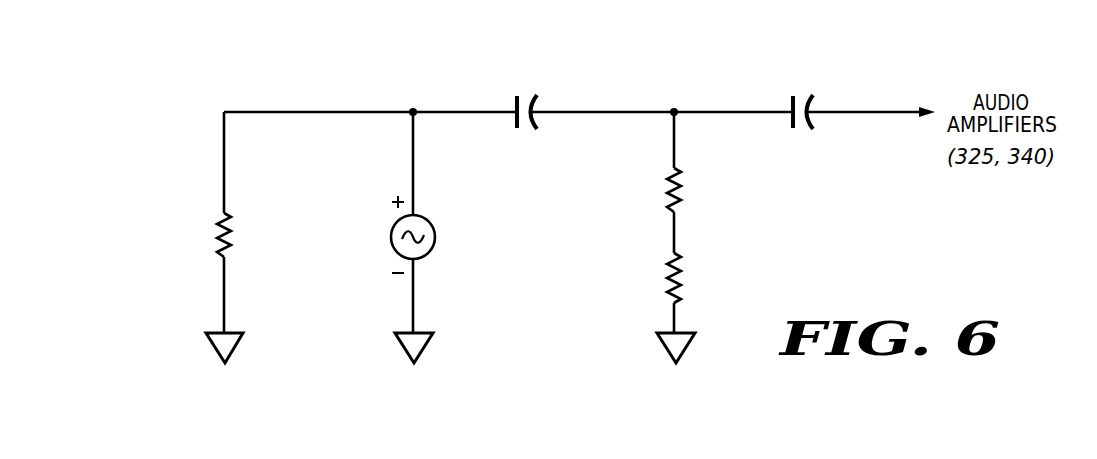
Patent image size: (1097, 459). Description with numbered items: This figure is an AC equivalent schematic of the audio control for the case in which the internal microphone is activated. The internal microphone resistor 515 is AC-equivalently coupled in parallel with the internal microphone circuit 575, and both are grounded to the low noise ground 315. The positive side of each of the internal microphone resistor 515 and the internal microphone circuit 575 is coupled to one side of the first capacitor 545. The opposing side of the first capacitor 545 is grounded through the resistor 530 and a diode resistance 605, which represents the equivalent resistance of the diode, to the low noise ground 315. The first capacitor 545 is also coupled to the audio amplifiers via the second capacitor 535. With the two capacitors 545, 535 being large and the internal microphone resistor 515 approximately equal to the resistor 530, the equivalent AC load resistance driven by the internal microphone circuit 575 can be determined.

The low noise ground 315 is at (212, 348).
The internal microphone resistor 515 is at (236, 230).
The resistor 530 is at (667, 197).
The second capacitor 535 is at (790, 95).
The first capacitor 545 is at (522, 128).
The internal microphone circuit 575 is at (392, 223).
The diode resistance 605 is at (668, 285).